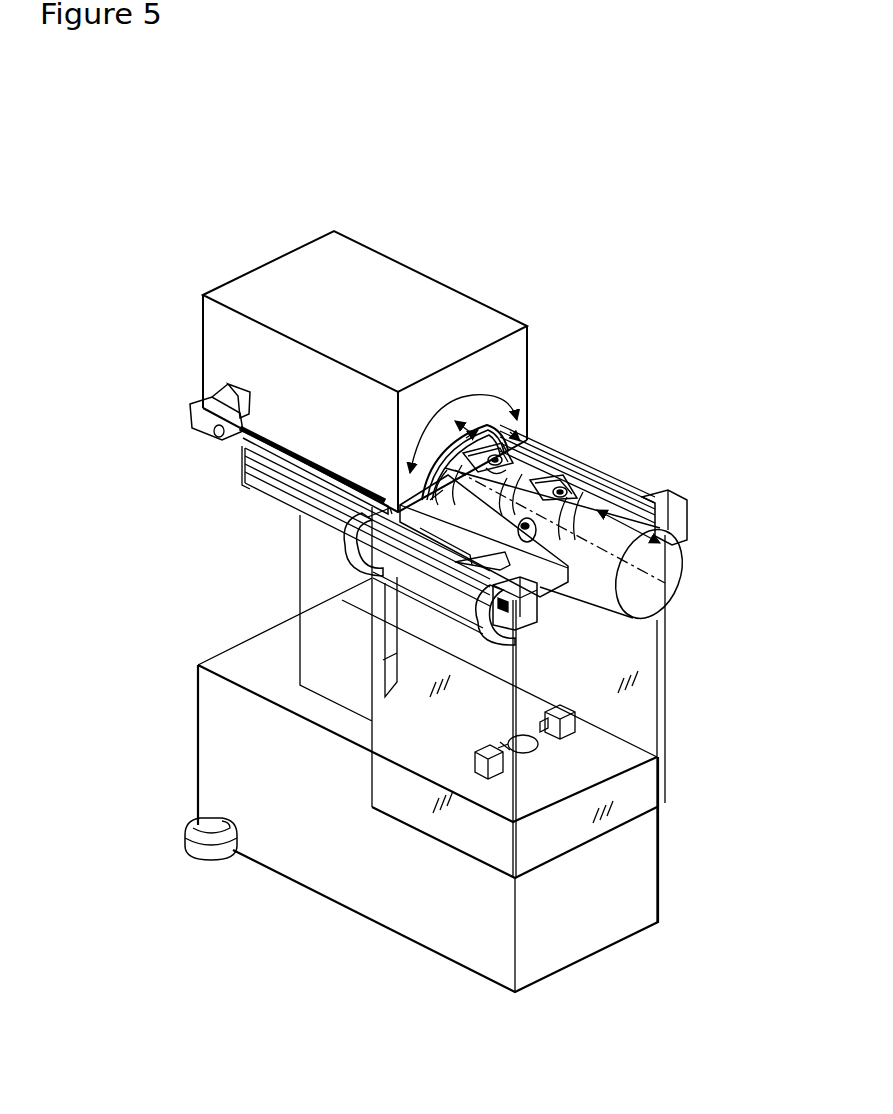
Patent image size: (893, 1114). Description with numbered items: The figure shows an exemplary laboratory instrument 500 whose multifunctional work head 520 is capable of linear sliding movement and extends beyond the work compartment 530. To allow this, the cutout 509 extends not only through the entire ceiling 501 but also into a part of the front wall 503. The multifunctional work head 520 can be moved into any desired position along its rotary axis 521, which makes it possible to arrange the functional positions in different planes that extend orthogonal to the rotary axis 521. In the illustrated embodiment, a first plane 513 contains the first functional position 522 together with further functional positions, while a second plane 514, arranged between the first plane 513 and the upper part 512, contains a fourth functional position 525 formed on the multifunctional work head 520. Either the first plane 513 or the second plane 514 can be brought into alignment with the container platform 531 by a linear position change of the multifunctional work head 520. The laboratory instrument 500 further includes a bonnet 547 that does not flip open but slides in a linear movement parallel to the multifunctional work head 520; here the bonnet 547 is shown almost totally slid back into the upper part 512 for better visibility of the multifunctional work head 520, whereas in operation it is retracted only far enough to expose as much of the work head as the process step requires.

The laboratory instrument 500 is at (513, 250).
The ceiling 501 is at (548, 513).
The front wall 503 is at (630, 643).
The cutout 509 is at (575, 600).
The upper part 512 is at (332, 293).
The first plane 513 is at (575, 478).
The second plane 514 is at (523, 443).
The multifunctional work head 520 is at (655, 560).
The rotary axis 521 is at (650, 580).
The first functional position 522 is at (500, 512).
The fourth functional position 525 is at (480, 476).
The work compartment 530 is at (432, 718).
The container platform 531 is at (520, 746).
The bonnet 547 is at (490, 418).